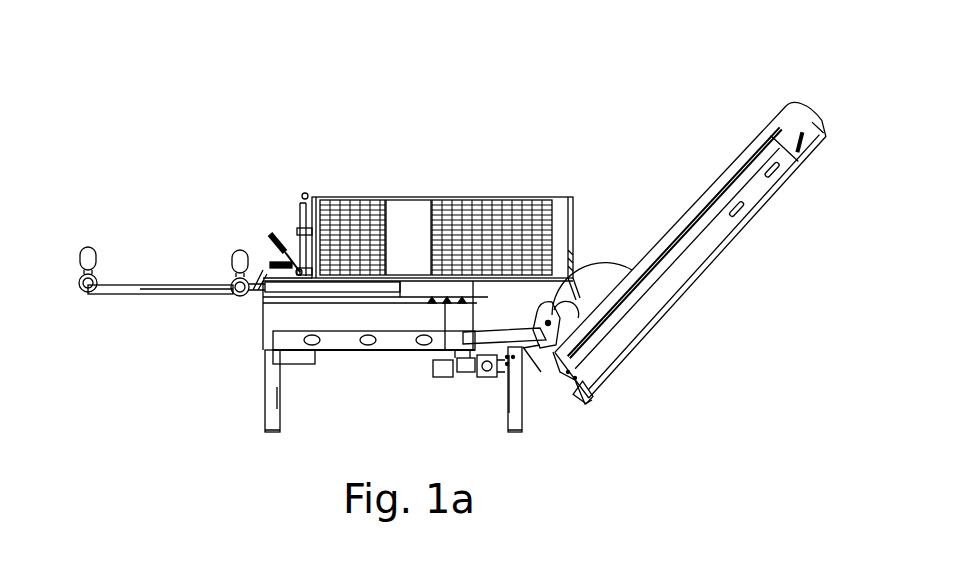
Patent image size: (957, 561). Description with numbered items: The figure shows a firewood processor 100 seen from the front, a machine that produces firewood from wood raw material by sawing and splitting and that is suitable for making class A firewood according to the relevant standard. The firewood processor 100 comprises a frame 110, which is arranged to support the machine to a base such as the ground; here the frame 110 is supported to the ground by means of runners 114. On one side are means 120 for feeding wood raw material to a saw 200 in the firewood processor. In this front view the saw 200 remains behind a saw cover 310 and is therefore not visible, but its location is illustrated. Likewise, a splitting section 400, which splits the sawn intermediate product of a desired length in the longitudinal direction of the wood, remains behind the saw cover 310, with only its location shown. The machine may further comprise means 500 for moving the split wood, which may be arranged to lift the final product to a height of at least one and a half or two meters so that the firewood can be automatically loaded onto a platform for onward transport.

The firewood processor 100 is at (413, 129).
The frame 110 is at (383, 331).
The runners 114 is at (509, 413).
The means for feeding wood raw material 120 is at (146, 227).
The saw 200 is at (377, 228).
The saw cover 310 is at (398, 232).
The splitting section 400 is at (452, 232).
The means for moving the split wood 500 is at (677, 188).